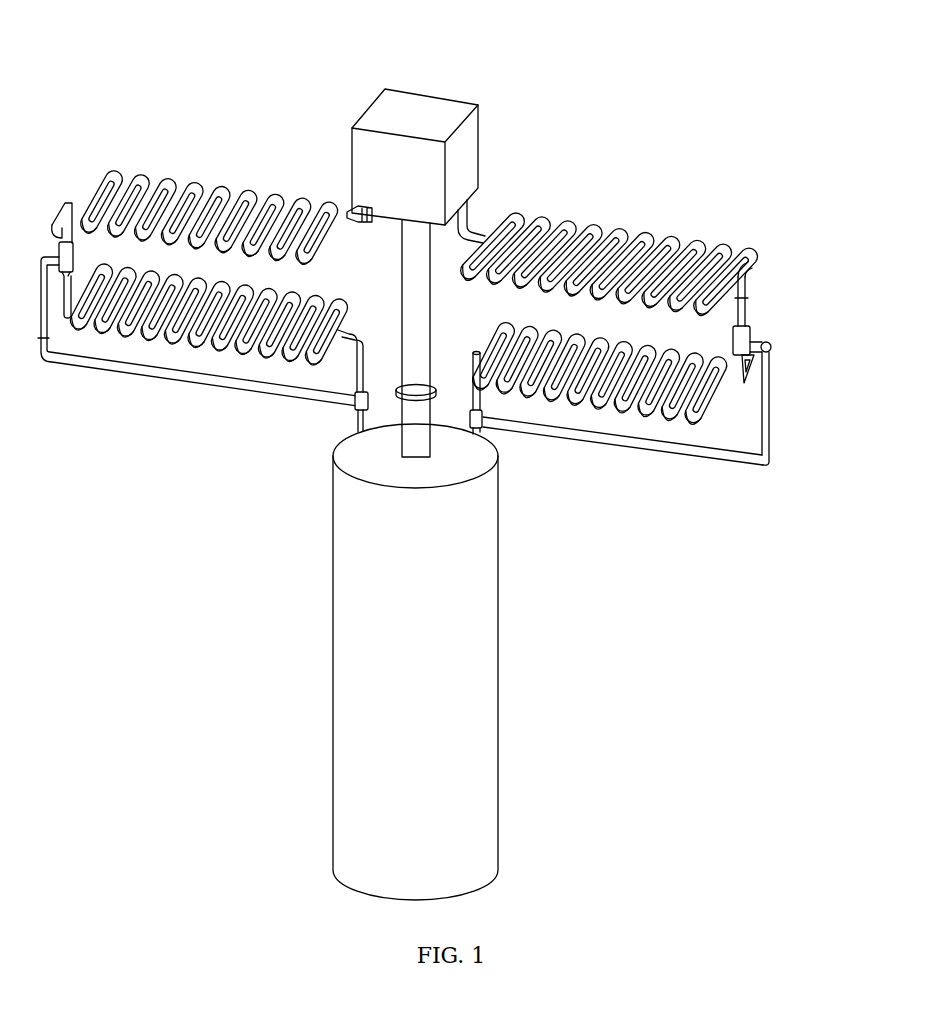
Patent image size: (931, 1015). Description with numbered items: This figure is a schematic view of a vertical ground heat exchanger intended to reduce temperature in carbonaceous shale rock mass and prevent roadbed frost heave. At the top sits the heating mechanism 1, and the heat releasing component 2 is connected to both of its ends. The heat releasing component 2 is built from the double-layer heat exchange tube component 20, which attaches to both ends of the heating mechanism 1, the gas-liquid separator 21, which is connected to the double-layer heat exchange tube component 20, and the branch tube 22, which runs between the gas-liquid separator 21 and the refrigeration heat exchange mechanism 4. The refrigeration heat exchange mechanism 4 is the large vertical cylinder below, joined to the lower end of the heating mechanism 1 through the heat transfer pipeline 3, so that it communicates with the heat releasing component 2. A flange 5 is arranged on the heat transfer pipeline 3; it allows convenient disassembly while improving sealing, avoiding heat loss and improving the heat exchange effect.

The heating mechanism 1 is at (480, 101).
The heat releasing component 2 is at (590, 196).
The heat transfer pipeline 3 is at (403, 291).
The refrigeration heat exchange mechanism 4 is at (516, 657).
The flange 5 is at (404, 396).
The double-layer heat exchange tube component 20 is at (798, 338).
The gas-liquid separator 21 is at (742, 350).
The branch tube 22 is at (637, 443).